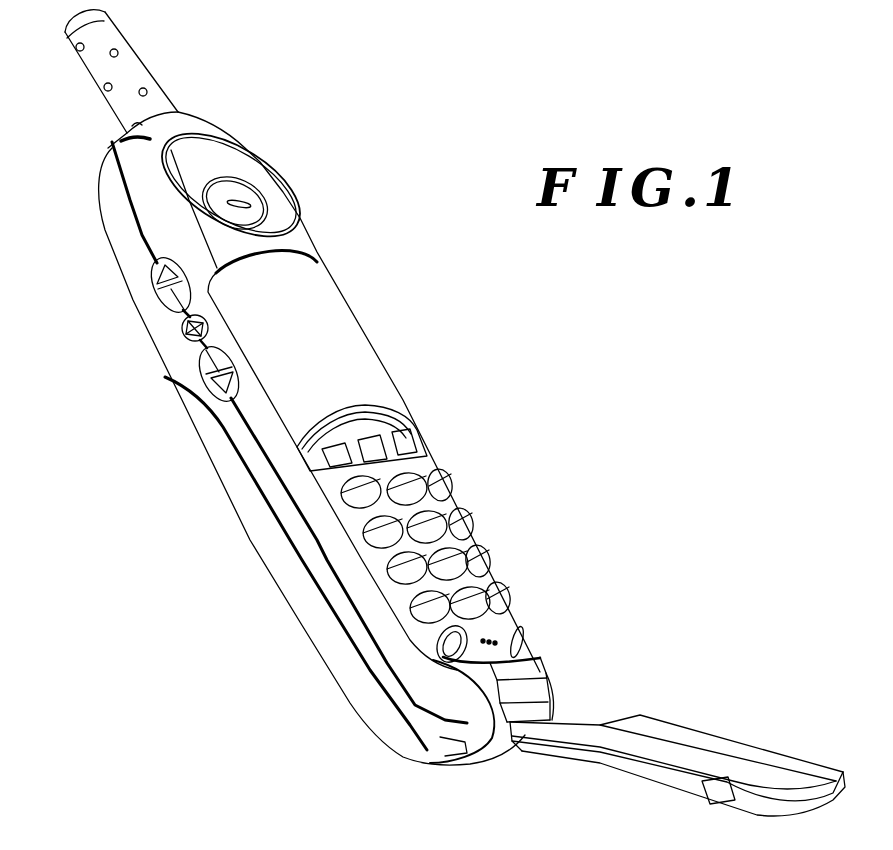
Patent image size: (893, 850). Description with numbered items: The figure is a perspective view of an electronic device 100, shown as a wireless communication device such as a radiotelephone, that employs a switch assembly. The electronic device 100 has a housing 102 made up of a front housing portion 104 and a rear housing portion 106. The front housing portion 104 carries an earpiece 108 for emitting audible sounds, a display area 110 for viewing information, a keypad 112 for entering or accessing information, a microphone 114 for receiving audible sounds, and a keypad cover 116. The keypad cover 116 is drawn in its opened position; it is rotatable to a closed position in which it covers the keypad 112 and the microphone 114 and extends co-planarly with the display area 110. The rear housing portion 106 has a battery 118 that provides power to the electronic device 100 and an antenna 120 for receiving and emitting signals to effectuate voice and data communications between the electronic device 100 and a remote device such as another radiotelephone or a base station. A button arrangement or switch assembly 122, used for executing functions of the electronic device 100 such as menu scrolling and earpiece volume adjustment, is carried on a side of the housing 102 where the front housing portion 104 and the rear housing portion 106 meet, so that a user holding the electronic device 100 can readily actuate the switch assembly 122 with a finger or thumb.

The electronic device 100 is at (552, 349).
The housing 102 is at (110, 152).
The front housing portion 104 is at (460, 728).
The rear housing portion 106 is at (117, 267).
The earpiece 108 is at (232, 192).
The display area 110 is at (357, 343).
The keypad 112 is at (474, 521).
The microphone 114 is at (490, 640).
The keypad cover 116 is at (737, 750).
The battery 118 is at (297, 595).
The antenna 120 is at (120, 43).
The switch assembly 122 is at (170, 343).